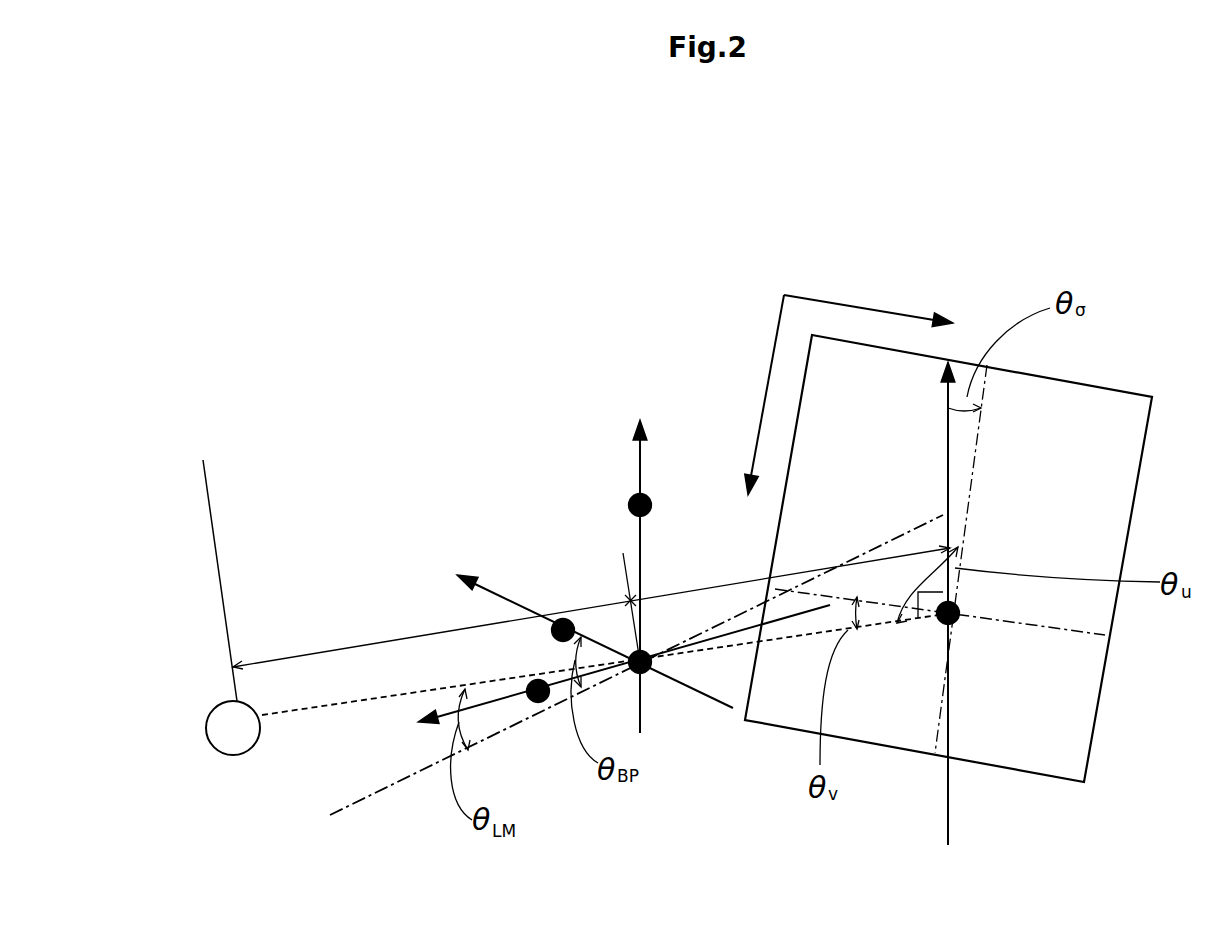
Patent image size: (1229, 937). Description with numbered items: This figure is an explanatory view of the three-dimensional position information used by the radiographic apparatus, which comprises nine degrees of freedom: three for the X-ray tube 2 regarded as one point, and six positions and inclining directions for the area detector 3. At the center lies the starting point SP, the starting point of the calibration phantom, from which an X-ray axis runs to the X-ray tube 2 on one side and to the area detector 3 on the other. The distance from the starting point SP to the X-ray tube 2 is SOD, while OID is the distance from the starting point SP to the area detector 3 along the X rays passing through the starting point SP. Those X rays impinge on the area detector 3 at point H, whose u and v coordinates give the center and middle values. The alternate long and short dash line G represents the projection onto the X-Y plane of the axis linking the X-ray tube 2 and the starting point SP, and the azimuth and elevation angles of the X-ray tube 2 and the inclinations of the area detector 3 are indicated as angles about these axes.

The X-ray tube 2 is at (210, 745).
The area detector 3 is at (1092, 745).
The distance from starting point to X-ray tube SOD is at (342, 648).
The distance from starting point to area detector OID is at (790, 578).
The starting point SP is at (648, 670).
The point of impingement H is at (940, 603).
The projection line G is at (365, 800).